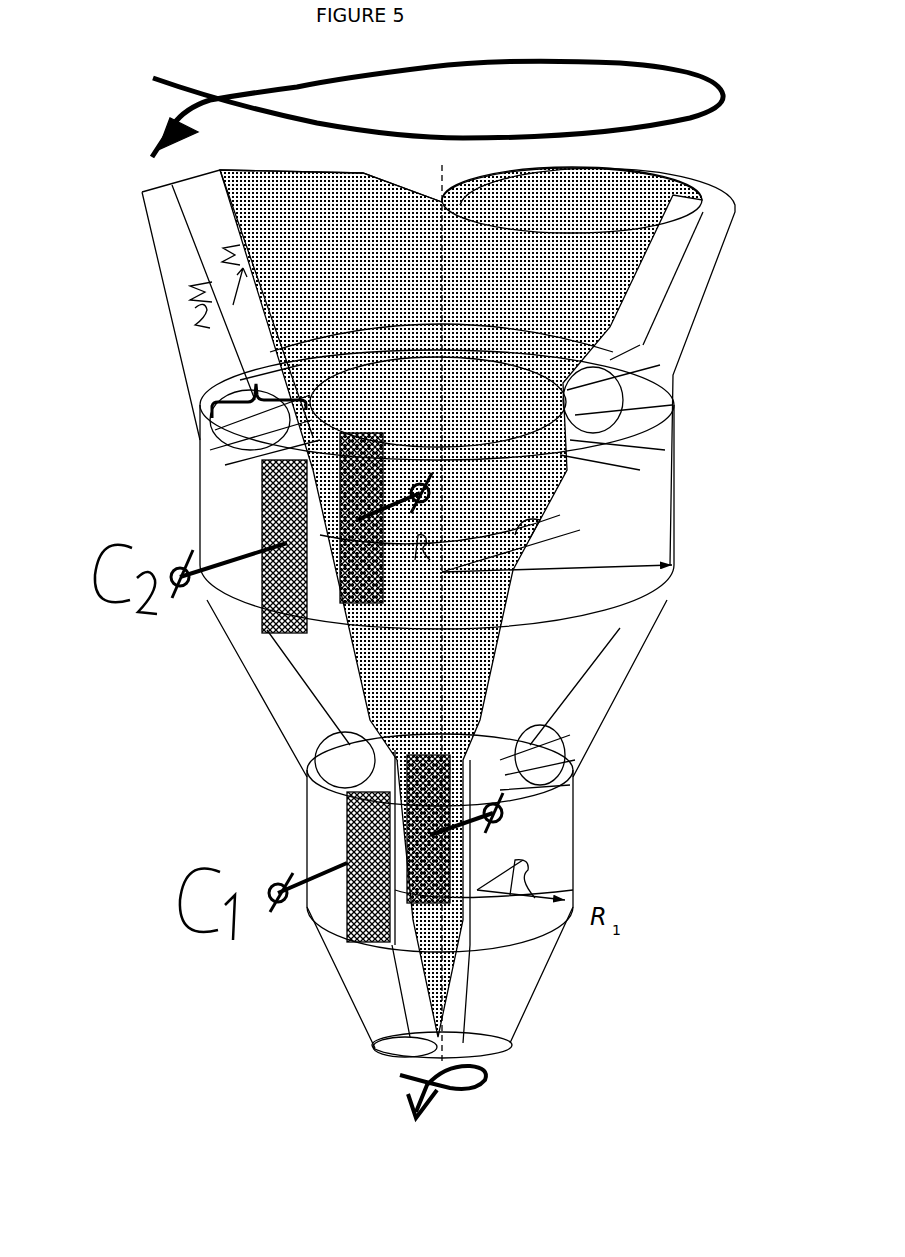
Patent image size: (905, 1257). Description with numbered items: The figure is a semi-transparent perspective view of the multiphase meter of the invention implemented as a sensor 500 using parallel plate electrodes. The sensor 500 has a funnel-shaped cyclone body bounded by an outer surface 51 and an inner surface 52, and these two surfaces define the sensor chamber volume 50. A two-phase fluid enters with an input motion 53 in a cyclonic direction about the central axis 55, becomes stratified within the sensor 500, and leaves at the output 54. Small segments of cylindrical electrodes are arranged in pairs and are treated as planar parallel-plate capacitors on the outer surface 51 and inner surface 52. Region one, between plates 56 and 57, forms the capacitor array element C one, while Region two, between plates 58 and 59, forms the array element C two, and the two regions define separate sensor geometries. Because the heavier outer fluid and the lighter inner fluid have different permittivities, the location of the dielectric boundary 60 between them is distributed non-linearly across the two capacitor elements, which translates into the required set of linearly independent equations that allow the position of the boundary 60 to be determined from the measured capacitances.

The sensor chamber volume 50 is at (250, 380).
The outer surface 51 is at (730, 207).
The inner surface 52 is at (672, 197).
The input motion 53 is at (158, 130).
The output 54 is at (493, 1077).
The axis 55 is at (437, 173).
The plate 56 is at (403, 760).
The plate 57 is at (345, 810).
The plate 58 is at (333, 440).
The plate 59 is at (262, 545).
The dielectric boundary 60 is at (187, 232).
The sensor 500 is at (655, 457).